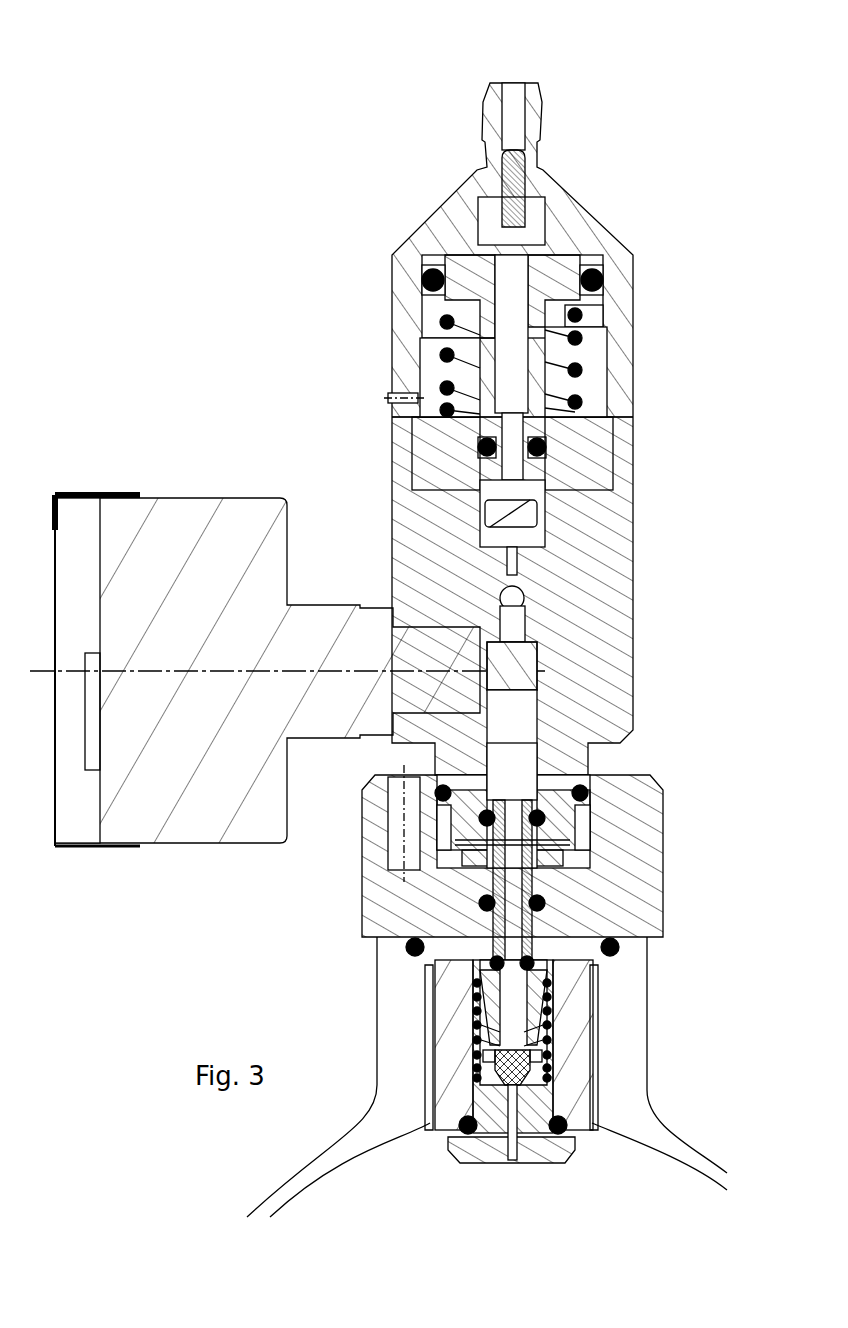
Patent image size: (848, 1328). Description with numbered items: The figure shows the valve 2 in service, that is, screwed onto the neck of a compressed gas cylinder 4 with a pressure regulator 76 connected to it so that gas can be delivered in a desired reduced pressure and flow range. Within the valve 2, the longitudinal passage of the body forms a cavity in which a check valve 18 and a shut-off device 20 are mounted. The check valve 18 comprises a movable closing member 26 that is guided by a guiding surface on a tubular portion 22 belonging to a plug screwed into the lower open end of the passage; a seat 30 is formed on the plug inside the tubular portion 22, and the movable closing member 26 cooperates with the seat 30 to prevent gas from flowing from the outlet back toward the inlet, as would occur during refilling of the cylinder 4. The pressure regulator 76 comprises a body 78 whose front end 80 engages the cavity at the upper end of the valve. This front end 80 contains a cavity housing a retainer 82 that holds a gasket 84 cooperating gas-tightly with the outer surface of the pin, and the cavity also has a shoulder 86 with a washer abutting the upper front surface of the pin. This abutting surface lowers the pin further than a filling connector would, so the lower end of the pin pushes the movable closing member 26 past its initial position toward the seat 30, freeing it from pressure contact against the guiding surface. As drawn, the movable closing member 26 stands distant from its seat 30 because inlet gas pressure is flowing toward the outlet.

The valve 2 is at (472, 980).
The compressed gas cylinder 4 is at (712, 1165).
The check valve 18 is at (487, 1058).
The shut-off device 20 is at (470, 987).
The tubular portion 22 is at (536, 1052).
The movable closing member 26 is at (492, 1052).
The seat 30 is at (498, 1090).
The pressure regulator 76 is at (443, 440).
The body 78 is at (618, 700).
The front end 80 is at (588, 818).
The retainer 82 is at (543, 842).
The gasket 84 is at (540, 808).
The shoulder 86 is at (483, 805).